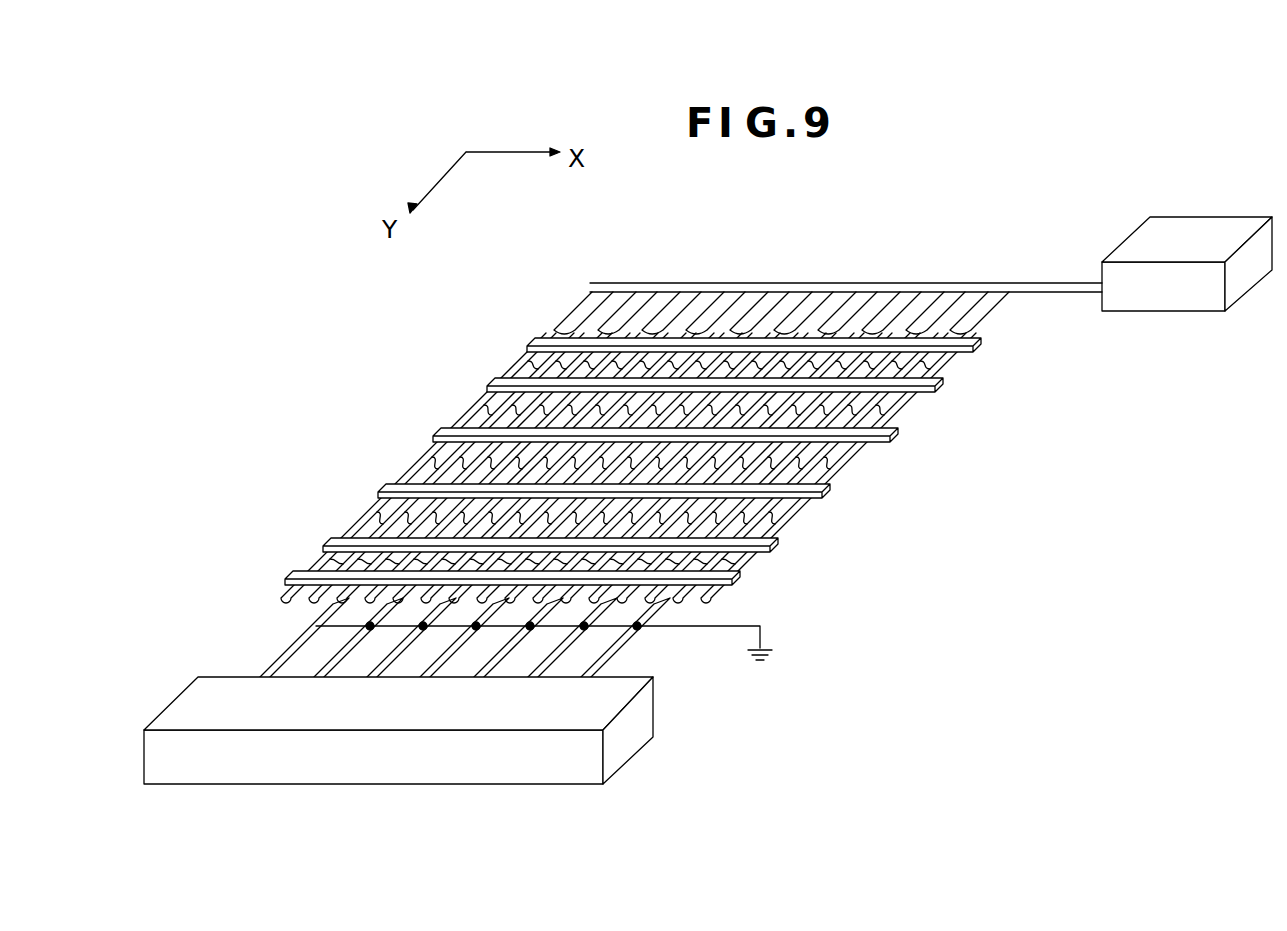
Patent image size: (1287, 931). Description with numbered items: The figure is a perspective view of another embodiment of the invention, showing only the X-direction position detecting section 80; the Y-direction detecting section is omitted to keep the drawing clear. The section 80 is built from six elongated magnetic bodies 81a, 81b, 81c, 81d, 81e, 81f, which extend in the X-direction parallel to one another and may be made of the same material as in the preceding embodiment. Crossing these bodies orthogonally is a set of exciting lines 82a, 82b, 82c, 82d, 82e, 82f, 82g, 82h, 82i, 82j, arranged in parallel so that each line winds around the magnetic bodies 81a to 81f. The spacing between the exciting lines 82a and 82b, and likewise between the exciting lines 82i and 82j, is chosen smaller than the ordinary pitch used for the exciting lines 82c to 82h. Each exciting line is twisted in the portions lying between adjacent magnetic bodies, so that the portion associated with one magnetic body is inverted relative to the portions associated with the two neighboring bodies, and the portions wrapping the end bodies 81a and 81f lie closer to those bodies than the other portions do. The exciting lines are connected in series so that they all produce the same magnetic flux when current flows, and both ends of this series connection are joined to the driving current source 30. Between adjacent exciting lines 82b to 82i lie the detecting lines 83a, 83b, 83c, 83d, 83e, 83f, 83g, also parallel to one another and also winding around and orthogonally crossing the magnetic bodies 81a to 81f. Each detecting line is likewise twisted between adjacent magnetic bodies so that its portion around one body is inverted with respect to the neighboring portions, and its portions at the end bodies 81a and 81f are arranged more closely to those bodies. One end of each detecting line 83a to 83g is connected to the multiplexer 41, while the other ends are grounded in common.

The driving current source 30 is at (1180, 227).
The multiplexer 41 is at (640, 738).
The X-direction position detecting section 80 is at (372, 376).
The magnetic body 81a is at (970, 354).
The magnetic body 81b is at (932, 393).
The magnetic body 81c is at (888, 444).
The magnetic body 81d is at (828, 497).
The magnetic body 81e is at (776, 550).
The magnetic body 81f is at (740, 587).
The exciting line 82a is at (586, 298).
The exciting line 82b is at (622, 300).
The exciting line 82c is at (660, 300).
The exciting line 82d is at (708, 300).
The exciting line 82e is at (762, 300).
The exciting line 82f is at (838, 300).
The exciting line 82g is at (884, 300).
The exciting line 82h is at (942, 300).
The exciting line 82i is at (1002, 300).
The exciting line 82j is at (992, 314).
The detecting line 83a is at (333, 602).
The detecting line 83b is at (388, 606).
The detecting line 83c is at (428, 628).
The detecting line 83d is at (345, 783).
The detecting line 83e is at (452, 770).
The detecting line 83f is at (606, 612).
The detecting line 83g is at (658, 612).